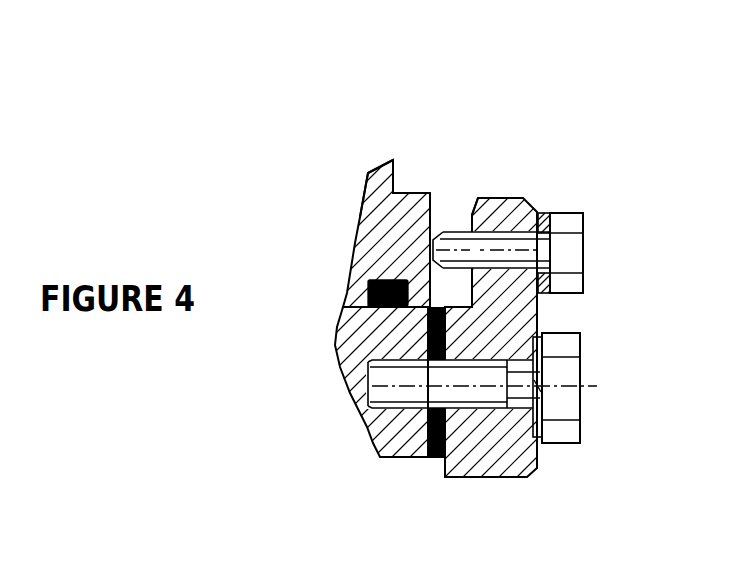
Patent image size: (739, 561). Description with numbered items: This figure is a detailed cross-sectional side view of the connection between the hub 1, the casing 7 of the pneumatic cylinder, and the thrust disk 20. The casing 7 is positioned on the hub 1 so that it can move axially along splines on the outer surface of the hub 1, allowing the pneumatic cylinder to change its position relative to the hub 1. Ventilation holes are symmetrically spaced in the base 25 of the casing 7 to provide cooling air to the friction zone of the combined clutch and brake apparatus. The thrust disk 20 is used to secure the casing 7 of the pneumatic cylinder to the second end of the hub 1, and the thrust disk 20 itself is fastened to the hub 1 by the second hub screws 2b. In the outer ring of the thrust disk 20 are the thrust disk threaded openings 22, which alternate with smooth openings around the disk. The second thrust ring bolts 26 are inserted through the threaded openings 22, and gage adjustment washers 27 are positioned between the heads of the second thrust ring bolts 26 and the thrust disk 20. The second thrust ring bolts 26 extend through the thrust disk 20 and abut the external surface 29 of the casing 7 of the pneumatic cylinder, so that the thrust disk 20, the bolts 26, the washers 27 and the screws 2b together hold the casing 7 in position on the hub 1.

The hub 1 is at (370, 445).
The second hub screws 2b is at (581, 368).
The casing 7 is at (372, 172).
The thrust disk 20 is at (537, 464).
The thrust disk threaded openings 22 is at (468, 217).
The base 25 is at (409, 193).
The second thrust ring bolts 26 is at (583, 284).
The gage adjustment washers 27 is at (545, 213).
The external surface 29 is at (433, 222).